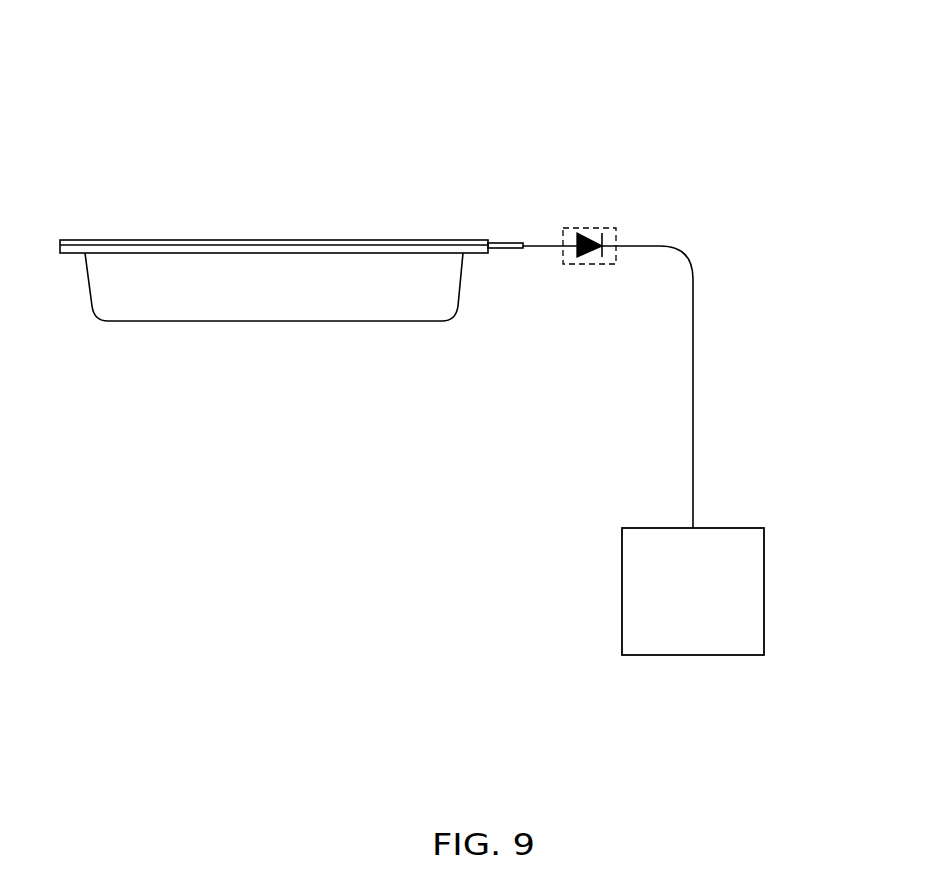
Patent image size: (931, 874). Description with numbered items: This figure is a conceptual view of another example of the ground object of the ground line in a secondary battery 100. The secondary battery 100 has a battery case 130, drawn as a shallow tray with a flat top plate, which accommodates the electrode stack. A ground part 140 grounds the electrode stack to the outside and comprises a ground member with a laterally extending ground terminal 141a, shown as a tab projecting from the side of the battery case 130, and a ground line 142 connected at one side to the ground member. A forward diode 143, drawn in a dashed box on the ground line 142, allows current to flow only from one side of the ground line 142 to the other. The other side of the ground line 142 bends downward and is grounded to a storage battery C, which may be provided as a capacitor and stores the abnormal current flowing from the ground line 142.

The secondary battery 100 is at (421, 78).
The battery case 130 is at (187, 305).
The ground part 140 is at (755, 95).
The ground terminal 141a is at (506, 243).
The diode 143 is at (611, 228).
The ground line 142 is at (660, 246).
The storage battery C is at (764, 590).